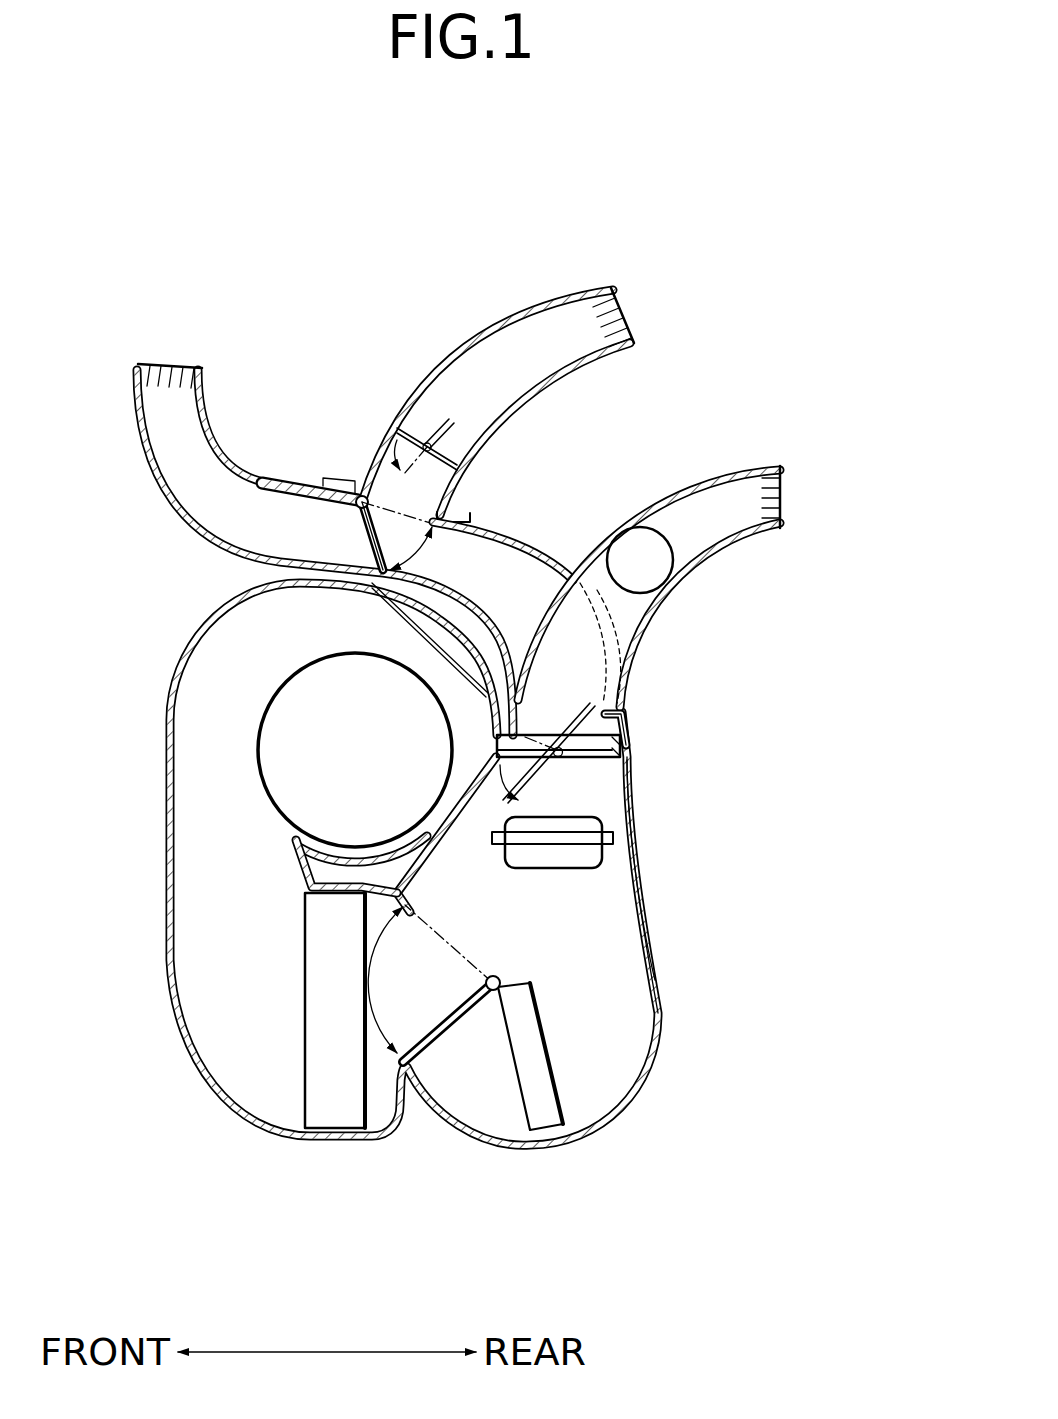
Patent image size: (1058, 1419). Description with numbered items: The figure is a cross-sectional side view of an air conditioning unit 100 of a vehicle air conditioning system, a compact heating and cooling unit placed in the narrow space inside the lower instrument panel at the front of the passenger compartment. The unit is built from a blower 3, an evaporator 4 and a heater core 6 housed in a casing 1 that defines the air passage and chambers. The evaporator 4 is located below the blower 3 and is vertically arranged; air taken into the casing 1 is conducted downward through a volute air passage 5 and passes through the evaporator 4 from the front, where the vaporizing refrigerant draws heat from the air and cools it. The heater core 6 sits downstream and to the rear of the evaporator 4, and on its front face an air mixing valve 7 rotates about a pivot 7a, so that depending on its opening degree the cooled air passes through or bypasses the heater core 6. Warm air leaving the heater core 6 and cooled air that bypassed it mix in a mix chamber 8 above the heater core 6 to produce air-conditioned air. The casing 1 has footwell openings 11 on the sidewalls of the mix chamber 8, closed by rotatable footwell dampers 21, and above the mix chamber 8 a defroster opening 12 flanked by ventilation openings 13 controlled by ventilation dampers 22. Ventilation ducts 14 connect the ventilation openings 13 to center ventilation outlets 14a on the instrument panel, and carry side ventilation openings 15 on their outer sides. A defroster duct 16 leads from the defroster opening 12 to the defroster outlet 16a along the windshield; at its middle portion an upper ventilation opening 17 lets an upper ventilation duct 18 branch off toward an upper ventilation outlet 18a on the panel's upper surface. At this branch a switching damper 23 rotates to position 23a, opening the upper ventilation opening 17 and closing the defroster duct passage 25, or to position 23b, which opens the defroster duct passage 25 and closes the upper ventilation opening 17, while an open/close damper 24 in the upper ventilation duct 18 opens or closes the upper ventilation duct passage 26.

The casing 1 is at (168, 738).
The blower 3 is at (258, 782).
The evaporator 4 is at (307, 1033).
The volute air passage 5 is at (225, 840).
The heater core 6 is at (550, 1040).
The air mixing valve 7 is at (467, 1032).
The pivot 7a is at (507, 977).
The mix chamber 8 is at (570, 893).
The footwell openings 11 is at (603, 860).
The defroster opening 12 is at (625, 714).
The ventilation openings 13 is at (615, 729).
The ventilation ducts 14 is at (730, 553).
The center ventilation outlets 14a is at (781, 487).
The side ventilation openings 15 is at (660, 578).
The defroster duct 16 is at (290, 477).
The defroster outlet 16a is at (182, 365).
The upper ventilation opening 17 is at (377, 457).
The upper ventilation duct 18 is at (513, 314).
The upper ventilation outlet 18a is at (627, 308).
The footwell dampers 21 is at (583, 818).
The ventilation dampers 22 is at (600, 783).
The switching damper 23 is at (148, 527).
The position of switching damper 23a is at (330, 563).
The position of switching damper 23b is at (372, 545).
The open/close damper 24 is at (447, 443).
The defroster duct passage 25 is at (303, 535).
The upper ventilation duct passage 26 is at (460, 390).
The air conditioning unit 100 is at (825, 683).